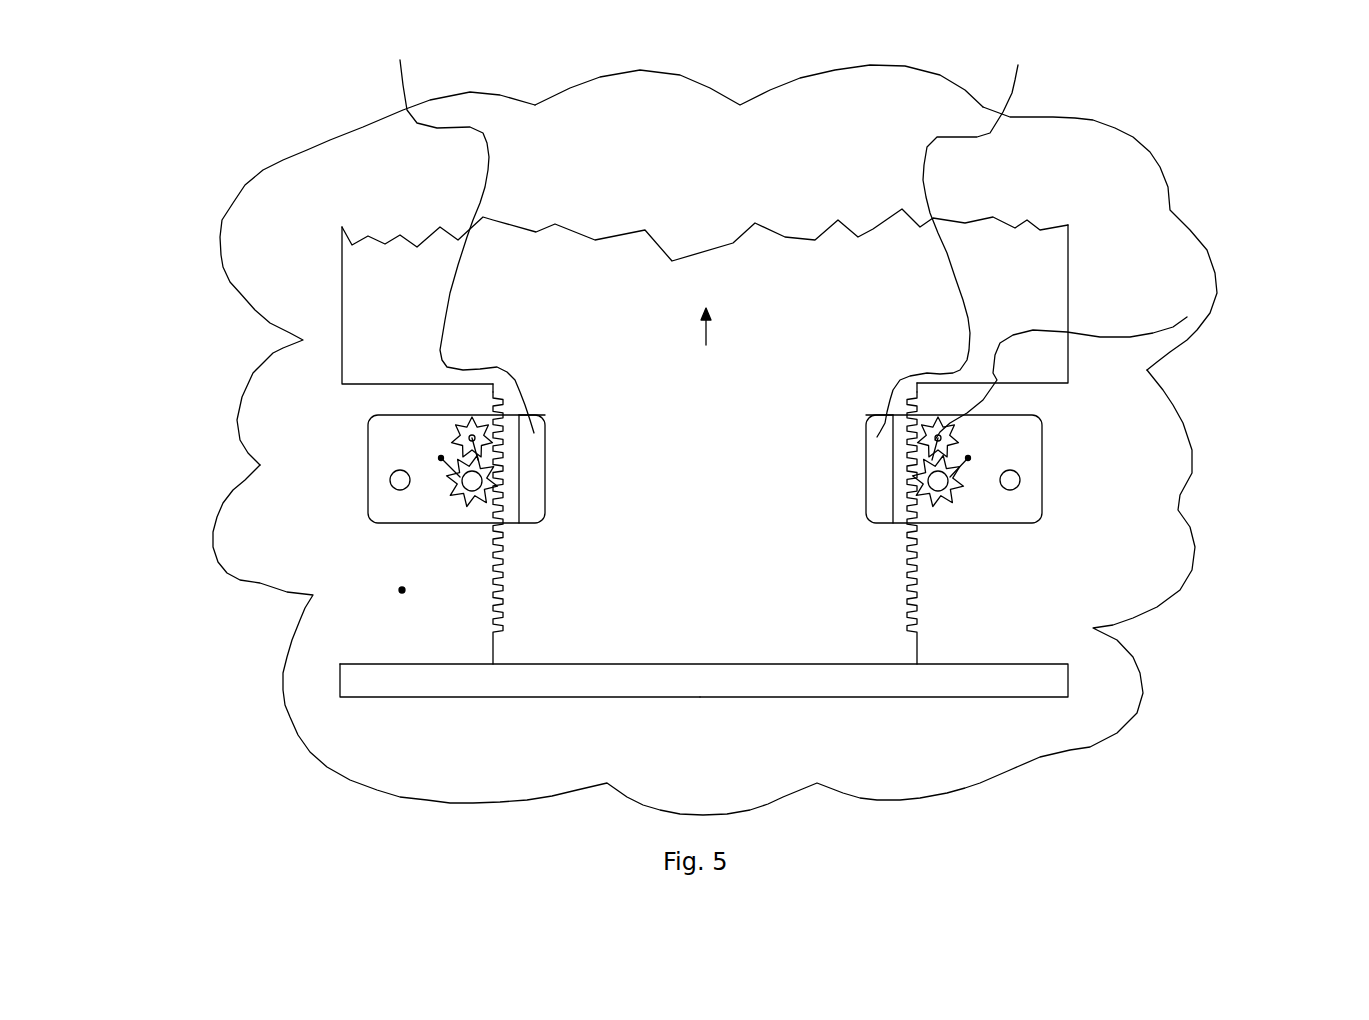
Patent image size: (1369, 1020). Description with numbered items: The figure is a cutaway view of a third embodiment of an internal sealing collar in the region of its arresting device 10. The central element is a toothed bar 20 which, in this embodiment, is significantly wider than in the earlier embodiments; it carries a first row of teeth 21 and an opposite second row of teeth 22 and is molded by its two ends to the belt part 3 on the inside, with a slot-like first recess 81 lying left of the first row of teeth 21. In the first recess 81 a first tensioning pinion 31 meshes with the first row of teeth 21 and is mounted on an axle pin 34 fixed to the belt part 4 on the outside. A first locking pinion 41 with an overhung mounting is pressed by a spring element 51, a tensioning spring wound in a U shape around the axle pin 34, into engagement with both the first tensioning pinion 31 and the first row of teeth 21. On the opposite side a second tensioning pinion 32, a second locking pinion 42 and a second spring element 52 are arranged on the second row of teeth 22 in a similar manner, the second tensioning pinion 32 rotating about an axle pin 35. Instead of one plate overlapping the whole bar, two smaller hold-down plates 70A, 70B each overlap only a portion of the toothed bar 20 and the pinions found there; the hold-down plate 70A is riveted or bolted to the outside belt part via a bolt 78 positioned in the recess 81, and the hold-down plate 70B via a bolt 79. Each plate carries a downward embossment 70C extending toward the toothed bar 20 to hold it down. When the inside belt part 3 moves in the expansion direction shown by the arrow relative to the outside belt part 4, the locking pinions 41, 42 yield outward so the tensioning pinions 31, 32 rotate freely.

The belt part on the inside 3 is at (704, 458).
The belt part on the outside 4 is at (1109, 238).
The arresting device 10 is at (214, 126).
The toothed bar 20 is at (721, 421).
The first row of teeth 21 is at (416, 718).
The second row of teeth 22 is at (824, 689).
The first tensioning pinion 31 is at (334, 524).
The second tensioning pinion 32 is at (1069, 527).
The axle pin 34 is at (288, 525).
The axle pin 35 is at (1125, 525).
The first locking pinion 41 is at (317, 305).
The second locking pinion 42 is at (1096, 303).
The spring element 51 is at (301, 385).
The second spring element 52 is at (1112, 374).
The hold-down plate 70A is at (301, 441).
The hold-down plate 70B is at (1106, 440).
The downward embossment 70C is at (710, 223).
The bolt 78 is at (247, 473).
The bolt 79 is at (1163, 471).
The first recess 81 is at (252, 663).